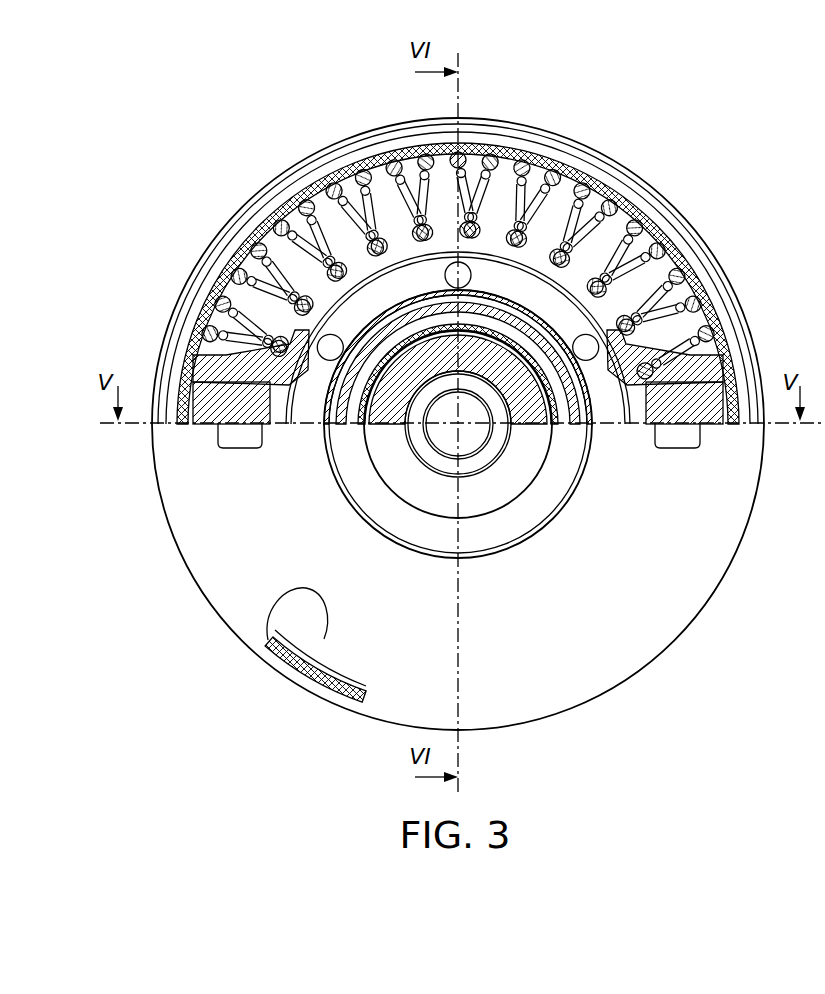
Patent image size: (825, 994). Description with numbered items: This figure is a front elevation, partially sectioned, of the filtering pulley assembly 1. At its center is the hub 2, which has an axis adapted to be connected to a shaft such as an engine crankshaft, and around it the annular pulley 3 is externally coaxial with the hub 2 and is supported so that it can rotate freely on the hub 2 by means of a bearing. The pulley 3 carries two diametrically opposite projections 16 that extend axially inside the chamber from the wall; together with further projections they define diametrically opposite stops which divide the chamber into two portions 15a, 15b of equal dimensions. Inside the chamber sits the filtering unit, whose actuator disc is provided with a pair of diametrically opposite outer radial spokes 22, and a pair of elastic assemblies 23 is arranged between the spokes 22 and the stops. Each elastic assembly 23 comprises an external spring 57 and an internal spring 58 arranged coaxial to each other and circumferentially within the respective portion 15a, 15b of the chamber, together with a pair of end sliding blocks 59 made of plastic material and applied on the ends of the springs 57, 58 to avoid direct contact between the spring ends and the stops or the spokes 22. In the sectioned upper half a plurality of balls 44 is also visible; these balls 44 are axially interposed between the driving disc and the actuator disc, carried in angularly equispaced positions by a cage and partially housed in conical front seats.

The filtering pulley assembly 1 is at (654, 142).
The hub 2 is at (522, 558).
The annular pulley 3 is at (200, 612).
The chamber portion 15a is at (297, 183).
The chamber portion 15b is at (270, 625).
The projections 16 is at (237, 440).
The outer radial spokes 22 is at (738, 372).
The elastic assemblies 23 is at (523, 163).
The balls 44 is at (393, 155).
The external spring 57 is at (588, 160).
The internal spring 58 is at (650, 255).
The end sliding blocks 59 is at (700, 347).